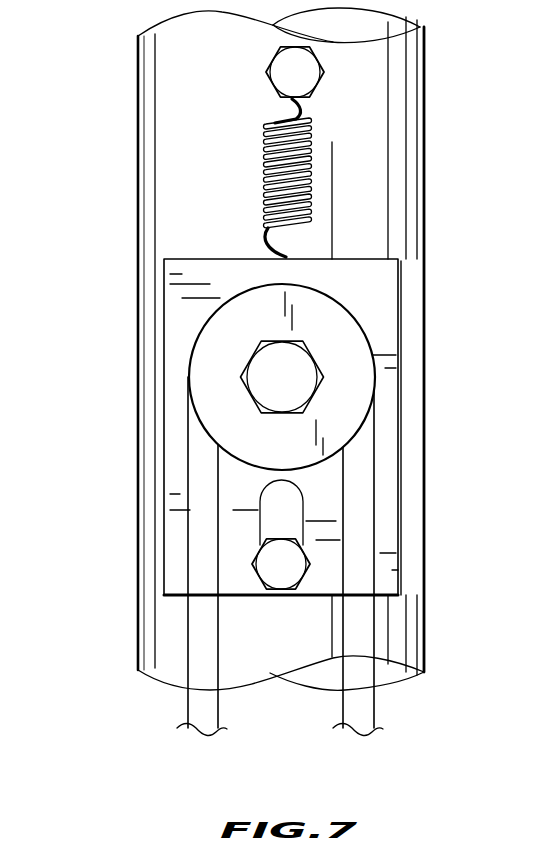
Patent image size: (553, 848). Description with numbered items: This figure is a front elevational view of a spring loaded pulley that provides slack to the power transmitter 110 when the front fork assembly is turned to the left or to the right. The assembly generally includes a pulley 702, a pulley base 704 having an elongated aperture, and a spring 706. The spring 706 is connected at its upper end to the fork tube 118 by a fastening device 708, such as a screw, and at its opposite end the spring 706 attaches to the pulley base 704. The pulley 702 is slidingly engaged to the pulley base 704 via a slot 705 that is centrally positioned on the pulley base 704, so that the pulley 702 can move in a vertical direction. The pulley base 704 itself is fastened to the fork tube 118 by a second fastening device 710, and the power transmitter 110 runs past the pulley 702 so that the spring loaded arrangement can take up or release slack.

The fork tube 118 is at (148, 180).
The power transmitter 110 is at (360, 704).
The pulley 702 is at (357, 380).
The pulley base 704 is at (375, 297).
The slot 705 is at (320, 518).
The spring 706 is at (312, 178).
The fastening device 708 is at (303, 72).
The second fastening device 710 is at (293, 557).